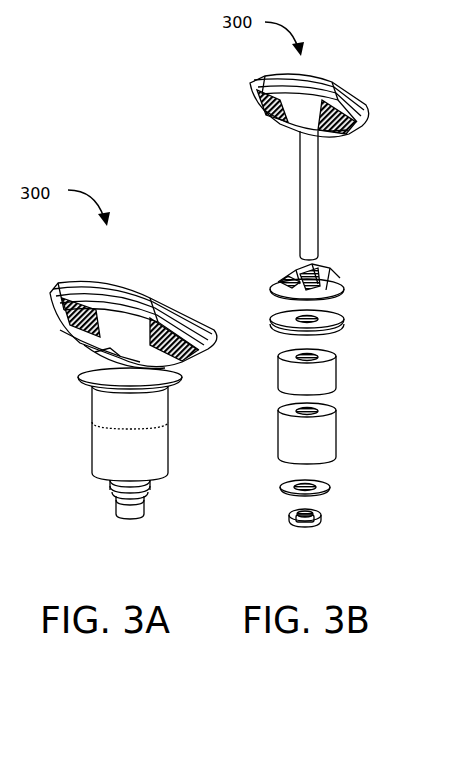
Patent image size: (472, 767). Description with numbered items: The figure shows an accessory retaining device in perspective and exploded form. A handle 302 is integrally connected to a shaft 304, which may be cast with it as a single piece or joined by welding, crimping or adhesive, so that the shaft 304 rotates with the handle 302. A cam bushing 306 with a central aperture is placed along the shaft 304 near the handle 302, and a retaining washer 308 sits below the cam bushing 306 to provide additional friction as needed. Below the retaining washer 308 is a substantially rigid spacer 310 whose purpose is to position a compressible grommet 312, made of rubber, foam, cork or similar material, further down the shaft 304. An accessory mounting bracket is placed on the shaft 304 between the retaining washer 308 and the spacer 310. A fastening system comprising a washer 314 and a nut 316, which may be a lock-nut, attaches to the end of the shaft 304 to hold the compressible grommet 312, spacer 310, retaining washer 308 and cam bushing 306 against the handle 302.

In FIG. 3A, the handle 302 is at (187, 306).
In FIG. 3B, the handle 302 is at (362, 121).
In FIG. 3A, the shaft 304 is at (118, 518).
In FIG. 3B, the shaft 304 is at (318, 176).
In FIG. 3A, the cam bushing 306 is at (83, 355).
In FIG. 3B, the cam bushing 306 is at (344, 283).
In FIG. 3A, the retaining washer 308 is at (182, 377).
In FIG. 3B, the retaining washer 308 is at (344, 323).
In FIG. 3A, the spacer 310 is at (170, 401).
In FIG. 3B, the spacer 310 is at (336, 373).
In FIG. 3A, the compressible grommet 312 is at (169, 438).
In FIG. 3B, the compressible grommet 312 is at (336, 433).
In FIG. 3A, the washer 314 is at (163, 474).
In FIG. 3B, the washer 314 is at (330, 488).
In FIG. 3A, the nut 316 is at (142, 493).
In FIG. 3B, the nut 316 is at (321, 518).